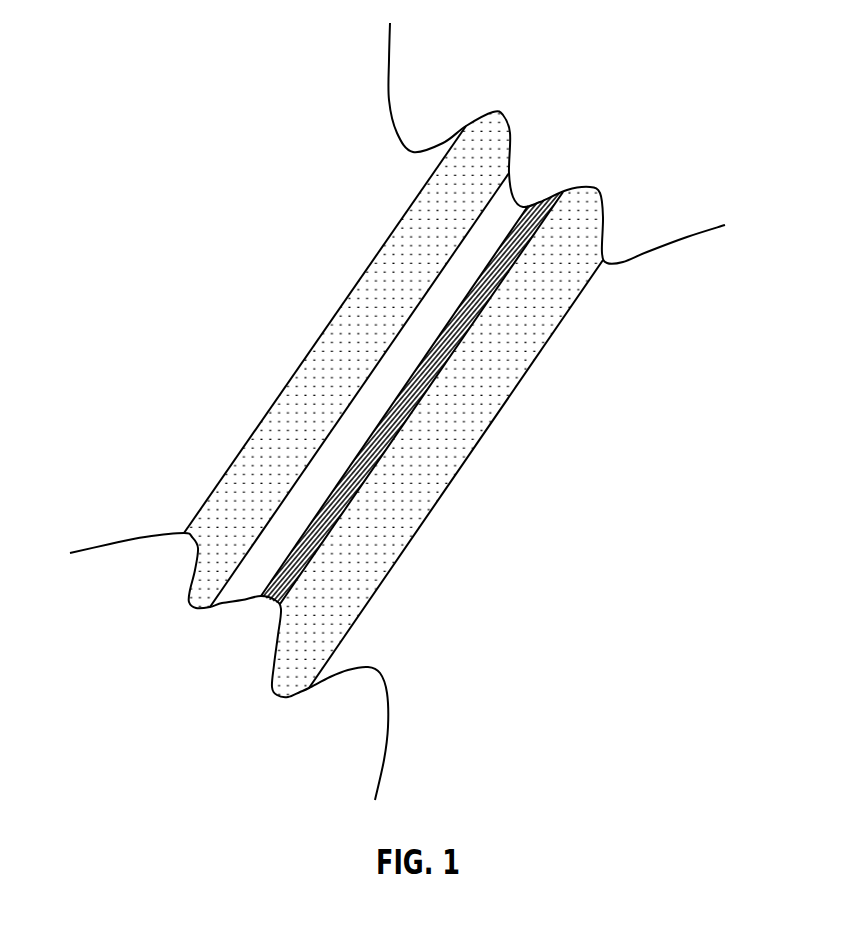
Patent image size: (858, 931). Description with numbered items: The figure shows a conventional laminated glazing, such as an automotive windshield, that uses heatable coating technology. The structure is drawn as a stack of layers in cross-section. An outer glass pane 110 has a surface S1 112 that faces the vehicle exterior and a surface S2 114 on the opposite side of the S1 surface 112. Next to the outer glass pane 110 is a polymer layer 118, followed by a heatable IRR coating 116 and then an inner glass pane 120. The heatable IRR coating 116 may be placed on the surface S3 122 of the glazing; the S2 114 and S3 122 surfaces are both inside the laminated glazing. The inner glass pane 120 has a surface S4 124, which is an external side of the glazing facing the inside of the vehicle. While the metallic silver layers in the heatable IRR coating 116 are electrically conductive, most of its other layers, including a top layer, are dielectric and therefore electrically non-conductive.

The outer glass pane 110 is at (420, 227).
The surface S1 112 is at (352, 288).
The surface S2 114 is at (353, 400).
The heatable IRR coating 116 is at (368, 477).
The polymer layer 118 is at (290, 537).
The inner glass pane 120 is at (330, 595).
The surface S3 122 is at (435, 388).
The surface S4 124 is at (570, 313).